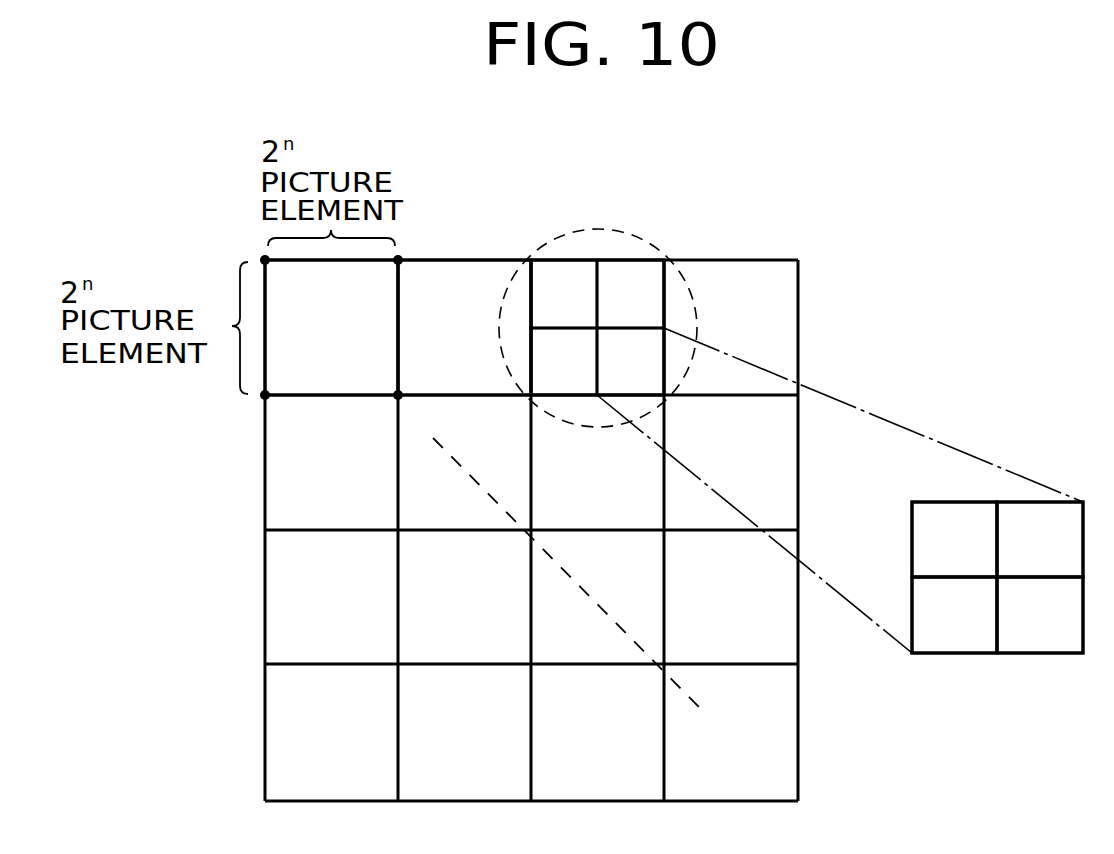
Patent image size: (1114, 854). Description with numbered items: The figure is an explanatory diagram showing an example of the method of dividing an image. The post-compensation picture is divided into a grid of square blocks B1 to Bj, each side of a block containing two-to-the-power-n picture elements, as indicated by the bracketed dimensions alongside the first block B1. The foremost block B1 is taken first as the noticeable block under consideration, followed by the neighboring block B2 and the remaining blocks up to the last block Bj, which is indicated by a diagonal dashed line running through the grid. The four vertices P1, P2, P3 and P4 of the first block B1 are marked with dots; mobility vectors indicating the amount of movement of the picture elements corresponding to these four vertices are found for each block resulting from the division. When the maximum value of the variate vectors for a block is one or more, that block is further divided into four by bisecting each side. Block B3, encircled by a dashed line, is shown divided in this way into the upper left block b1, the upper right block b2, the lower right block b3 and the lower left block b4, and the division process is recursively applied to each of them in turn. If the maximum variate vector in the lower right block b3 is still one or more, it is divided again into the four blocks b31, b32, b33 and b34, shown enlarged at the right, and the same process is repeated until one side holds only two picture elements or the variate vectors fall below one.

The first vertex of block P1 is at (265, 260).
The second vertex of block P2 is at (398, 260).
The third vertex of block P3 is at (398, 395).
The fourth vertex of block P4 is at (265, 395).
The foremost square block B1 is at (331, 327).
The square block B2 is at (464, 327).
The square block B3 is at (645, 245).
The last square block Bj is at (588, 597).
The upper left sub-block b1 is at (564, 294).
The upper right sub-block b2 is at (630, 294).
The lower right sub-block b3 is at (630, 361).
The lower left sub-block b4 is at (564, 361).
The first sub-block of block b3 b31 is at (954, 539).
The second sub-block of block b3 b32 is at (1040, 539).
The third sub-block of block b3 b33 is at (1040, 615).
The fourth sub-block of block b3 b34 is at (954, 615).